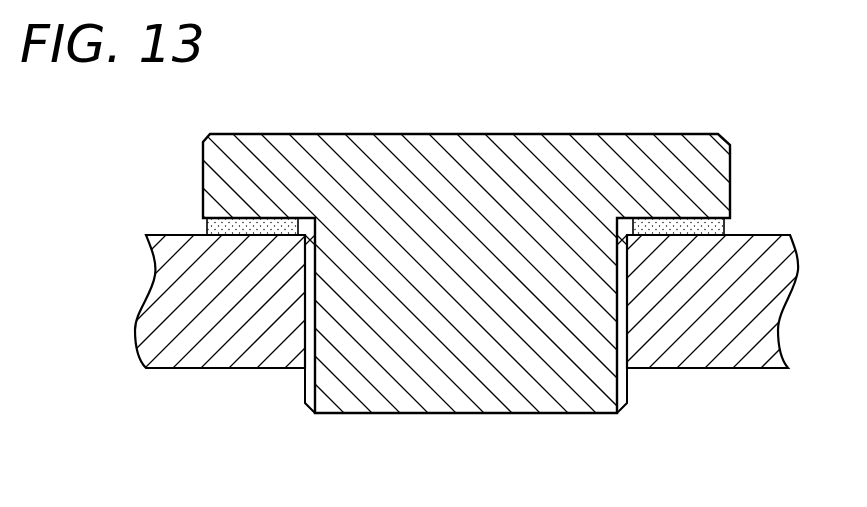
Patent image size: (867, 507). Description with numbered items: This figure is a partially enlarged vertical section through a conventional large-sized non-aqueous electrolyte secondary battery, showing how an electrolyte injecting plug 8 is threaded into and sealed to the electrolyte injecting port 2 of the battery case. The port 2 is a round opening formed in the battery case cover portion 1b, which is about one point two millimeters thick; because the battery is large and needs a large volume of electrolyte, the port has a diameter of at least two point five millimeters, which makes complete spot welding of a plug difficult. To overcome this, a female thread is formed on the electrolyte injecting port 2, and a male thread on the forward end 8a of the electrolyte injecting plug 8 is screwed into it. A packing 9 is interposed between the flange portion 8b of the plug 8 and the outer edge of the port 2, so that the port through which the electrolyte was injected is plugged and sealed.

The battery case cover portion 1b is at (217, 362).
The electrolyte injecting port 2 is at (305, 346).
The electrolyte injecting plug 8 is at (508, 122).
The forward end 8a is at (450, 397).
The flange portion 8b is at (726, 160).
The packing 9 is at (208, 222).